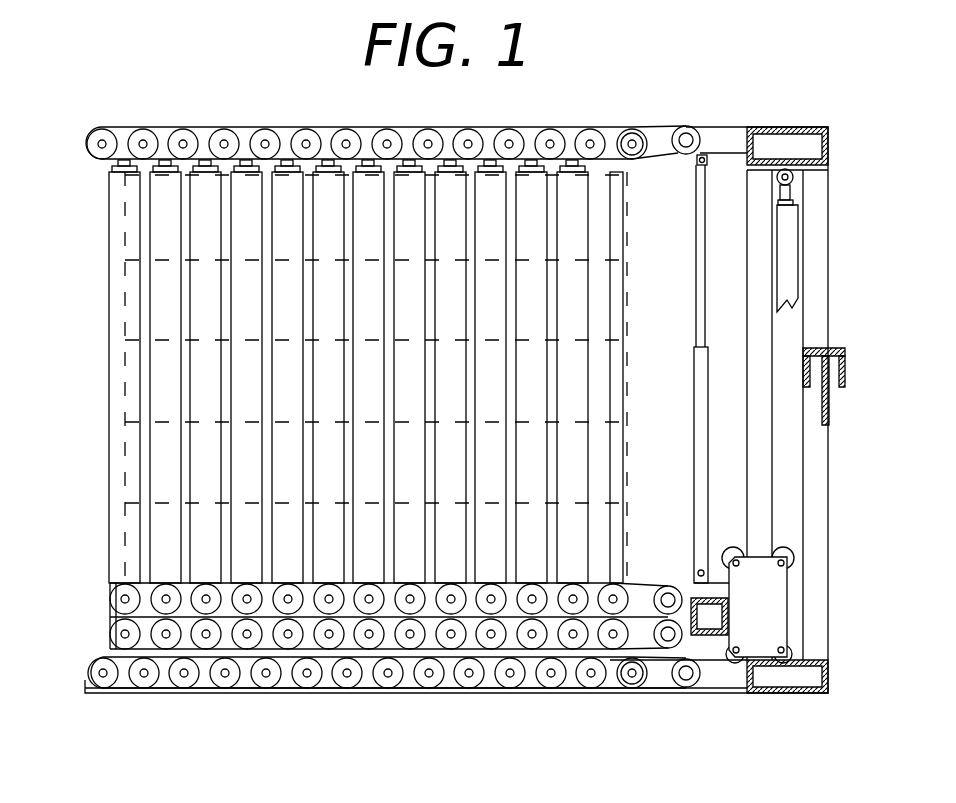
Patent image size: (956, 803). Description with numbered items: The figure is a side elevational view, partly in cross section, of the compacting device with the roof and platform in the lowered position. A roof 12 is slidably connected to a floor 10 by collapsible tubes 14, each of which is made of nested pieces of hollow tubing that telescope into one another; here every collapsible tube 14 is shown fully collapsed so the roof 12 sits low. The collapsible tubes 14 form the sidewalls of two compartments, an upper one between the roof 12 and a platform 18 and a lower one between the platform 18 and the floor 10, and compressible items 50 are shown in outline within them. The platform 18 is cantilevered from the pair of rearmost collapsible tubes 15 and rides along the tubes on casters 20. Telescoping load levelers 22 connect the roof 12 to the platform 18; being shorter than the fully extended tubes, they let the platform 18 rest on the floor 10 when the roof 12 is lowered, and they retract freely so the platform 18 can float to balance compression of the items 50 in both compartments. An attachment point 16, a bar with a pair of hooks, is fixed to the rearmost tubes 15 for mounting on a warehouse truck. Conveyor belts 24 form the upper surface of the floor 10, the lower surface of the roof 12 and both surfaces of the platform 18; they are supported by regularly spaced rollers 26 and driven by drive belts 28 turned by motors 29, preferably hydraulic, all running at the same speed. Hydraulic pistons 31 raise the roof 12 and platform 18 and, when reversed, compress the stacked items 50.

The floor 10 is at (145, 702).
The roof 12 is at (226, 122).
The collapsible tube 14 is at (205, 240).
The rearmost collapsible tubes 15 is at (823, 287).
The attachment point 16 is at (835, 347).
The platform 18 is at (96, 610).
The casters 20 is at (733, 547).
The telescoping load leveler 22 is at (704, 177).
The conveyor belt 24 is at (113, 163).
The rollers 26 is at (348, 662).
The drive belt 28 is at (663, 126).
The motor 29 is at (681, 125).
The hydraulic piston 31 is at (786, 240).
The items 50 is at (130, 438).